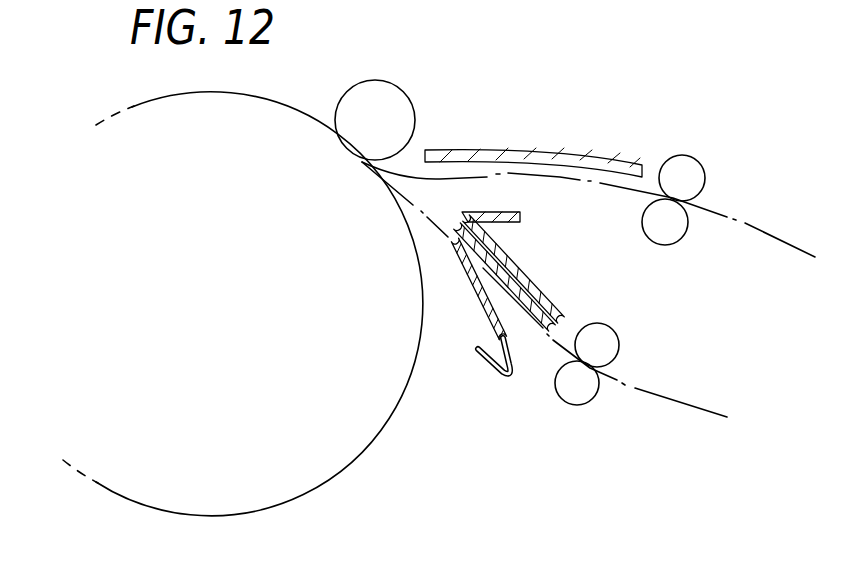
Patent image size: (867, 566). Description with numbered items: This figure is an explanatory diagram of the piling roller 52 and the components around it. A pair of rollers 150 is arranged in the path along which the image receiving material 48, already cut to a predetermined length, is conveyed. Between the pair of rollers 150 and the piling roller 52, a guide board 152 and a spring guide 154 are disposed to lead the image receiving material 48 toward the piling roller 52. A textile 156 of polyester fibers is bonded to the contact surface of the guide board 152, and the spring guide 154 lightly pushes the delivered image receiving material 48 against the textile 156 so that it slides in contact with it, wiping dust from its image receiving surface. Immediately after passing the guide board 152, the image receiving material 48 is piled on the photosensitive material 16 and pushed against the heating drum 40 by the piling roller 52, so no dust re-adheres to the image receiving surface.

The photosensitive material 16 is at (780, 237).
The heating drum 40 is at (342, 440).
The image receiving material 48 is at (692, 403).
The piling roller 52 is at (389, 98).
The pair of rollers 150 is at (610, 348).
The guide board 152 is at (520, 267).
The spring guide 154 is at (487, 298).
The textile 156 is at (540, 297).